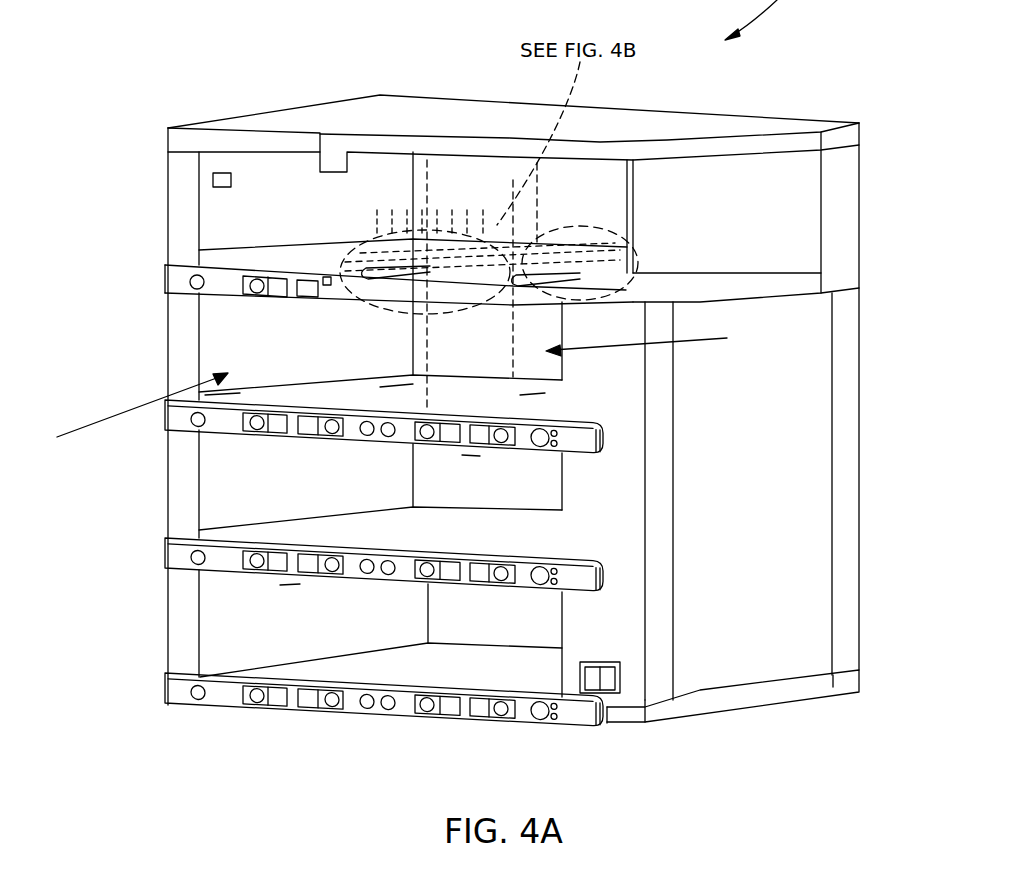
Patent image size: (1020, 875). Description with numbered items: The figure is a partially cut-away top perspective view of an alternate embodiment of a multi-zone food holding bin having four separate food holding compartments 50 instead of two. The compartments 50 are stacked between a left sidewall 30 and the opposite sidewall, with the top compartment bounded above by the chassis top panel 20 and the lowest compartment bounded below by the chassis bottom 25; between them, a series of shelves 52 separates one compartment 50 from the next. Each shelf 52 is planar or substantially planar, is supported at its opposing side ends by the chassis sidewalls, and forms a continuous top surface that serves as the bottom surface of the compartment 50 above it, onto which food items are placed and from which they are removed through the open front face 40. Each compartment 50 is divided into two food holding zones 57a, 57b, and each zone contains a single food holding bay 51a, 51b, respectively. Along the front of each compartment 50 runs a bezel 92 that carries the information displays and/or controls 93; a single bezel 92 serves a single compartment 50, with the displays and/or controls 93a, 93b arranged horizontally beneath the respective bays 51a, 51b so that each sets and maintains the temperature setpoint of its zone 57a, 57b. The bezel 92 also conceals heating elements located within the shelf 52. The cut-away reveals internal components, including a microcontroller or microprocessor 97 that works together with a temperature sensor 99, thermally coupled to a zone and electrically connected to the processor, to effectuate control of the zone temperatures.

The chassis top panel 20 is at (775, 127).
The chassis bottom 25 is at (700, 713).
The left sidewall 30 is at (148, 180).
The open front face 40 is at (148, 712).
The food holding compartment 50 is at (203, 238).
The food holding bay 51a is at (400, 403).
The food holding bay 51b is at (537, 405).
The shelf 52 is at (300, 262).
The food holding zone 57a is at (119, 412).
The food holding zone 57b is at (658, 343).
The bezel 92 is at (227, 418).
The information displays and/or controls 93 is at (288, 578).
The display and/or control 93a is at (240, 317).
The display and/or control 93b is at (470, 452).
The microcontroller or microprocessor 97 is at (325, 277).
The temperature sensor 99 is at (222, 173).